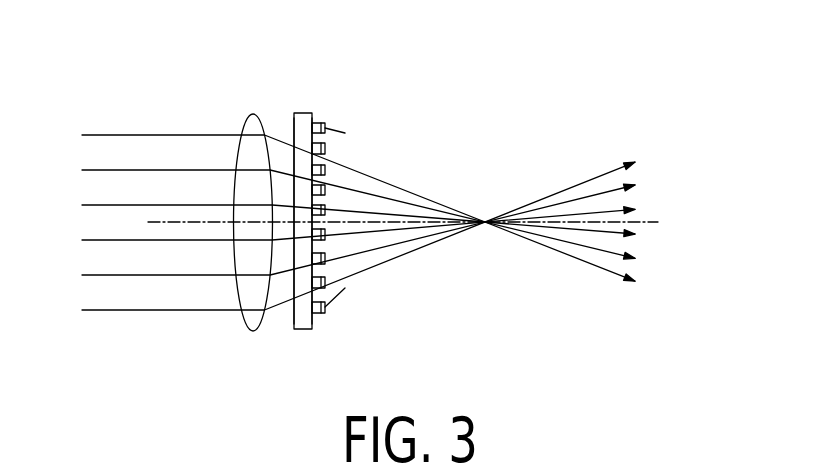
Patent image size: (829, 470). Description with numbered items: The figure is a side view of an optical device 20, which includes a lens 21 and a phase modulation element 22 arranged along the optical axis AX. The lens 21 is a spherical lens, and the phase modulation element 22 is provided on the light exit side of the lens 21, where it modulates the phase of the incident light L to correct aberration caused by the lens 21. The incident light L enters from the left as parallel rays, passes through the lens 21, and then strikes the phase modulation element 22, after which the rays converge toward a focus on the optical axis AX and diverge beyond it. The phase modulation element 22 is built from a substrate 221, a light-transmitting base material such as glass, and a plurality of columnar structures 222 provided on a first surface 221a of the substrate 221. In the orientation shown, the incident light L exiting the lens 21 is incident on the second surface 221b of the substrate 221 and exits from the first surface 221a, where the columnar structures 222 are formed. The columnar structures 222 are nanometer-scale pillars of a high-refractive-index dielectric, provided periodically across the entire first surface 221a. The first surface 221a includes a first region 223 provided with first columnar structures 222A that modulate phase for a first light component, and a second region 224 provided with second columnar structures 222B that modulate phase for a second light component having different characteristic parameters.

The optical device 20 is at (279, 93).
The lens 21 is at (255, 114).
The phase modulation element 22 is at (332, 98).
The substrate 221 is at (303, 113).
The first surface 221a is at (313, 323).
The second surface 221b is at (295, 321).
The columnar structures 222 is at (402, 217).
The first columnar structures 222A is at (323, 124).
The second columnar structures 222B is at (328, 309).
The first region 223 is at (347, 133).
The second region 224 is at (348, 288).
The incident light L is at (157, 135).
The optical axis AX is at (650, 220).